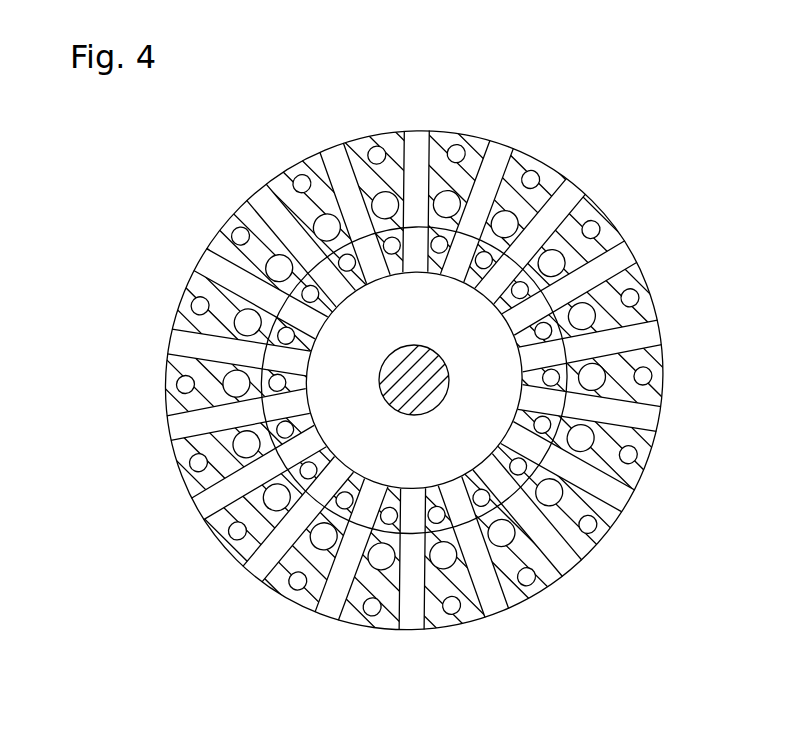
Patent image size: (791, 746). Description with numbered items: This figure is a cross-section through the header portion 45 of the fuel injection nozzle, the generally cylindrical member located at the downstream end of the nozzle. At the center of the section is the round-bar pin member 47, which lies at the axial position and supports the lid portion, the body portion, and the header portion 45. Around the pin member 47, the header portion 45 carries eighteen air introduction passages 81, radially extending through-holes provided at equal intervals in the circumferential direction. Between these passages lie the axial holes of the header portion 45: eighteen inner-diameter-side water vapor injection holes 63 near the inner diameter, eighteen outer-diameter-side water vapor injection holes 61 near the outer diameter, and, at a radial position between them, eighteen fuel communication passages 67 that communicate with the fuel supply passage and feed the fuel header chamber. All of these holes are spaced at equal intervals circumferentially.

The header portion 45 is at (612, 215).
The pin member 47 is at (428, 407).
The outer-diameter-side water vapor injection hole 61 is at (377, 145).
The inner-diameter-side water vapor injection hole 63 is at (392, 254).
The fuel communication passage 67 is at (541, 187).
The air introduction passage 81 is at (410, 158).